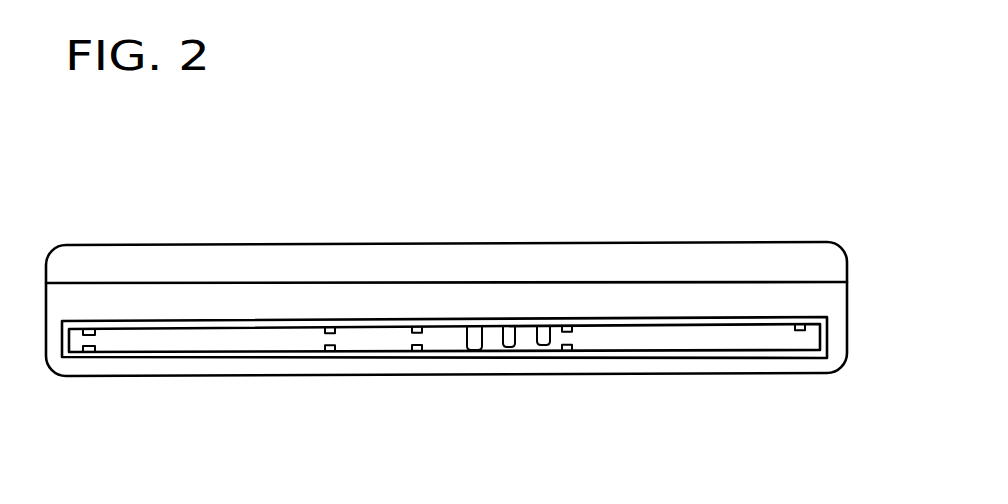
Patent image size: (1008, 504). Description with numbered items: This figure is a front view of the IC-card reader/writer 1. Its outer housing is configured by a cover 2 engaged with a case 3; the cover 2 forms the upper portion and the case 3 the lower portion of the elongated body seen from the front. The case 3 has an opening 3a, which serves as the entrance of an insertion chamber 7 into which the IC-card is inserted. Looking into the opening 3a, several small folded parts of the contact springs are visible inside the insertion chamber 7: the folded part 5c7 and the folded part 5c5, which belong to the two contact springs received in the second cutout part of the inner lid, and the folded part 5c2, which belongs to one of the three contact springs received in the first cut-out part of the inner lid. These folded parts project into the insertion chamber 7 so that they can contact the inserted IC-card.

The IC-card reader/writer 1 is at (868, 320).
The cover 2 is at (716, 252).
The case 3 is at (833, 345).
The opening 3a is at (750, 343).
The insertion chamber 7 is at (638, 343).
The folded part 5c7 is at (466, 331).
The folded part 5c2 is at (506, 346).
The folded part 5c5 is at (543, 343).